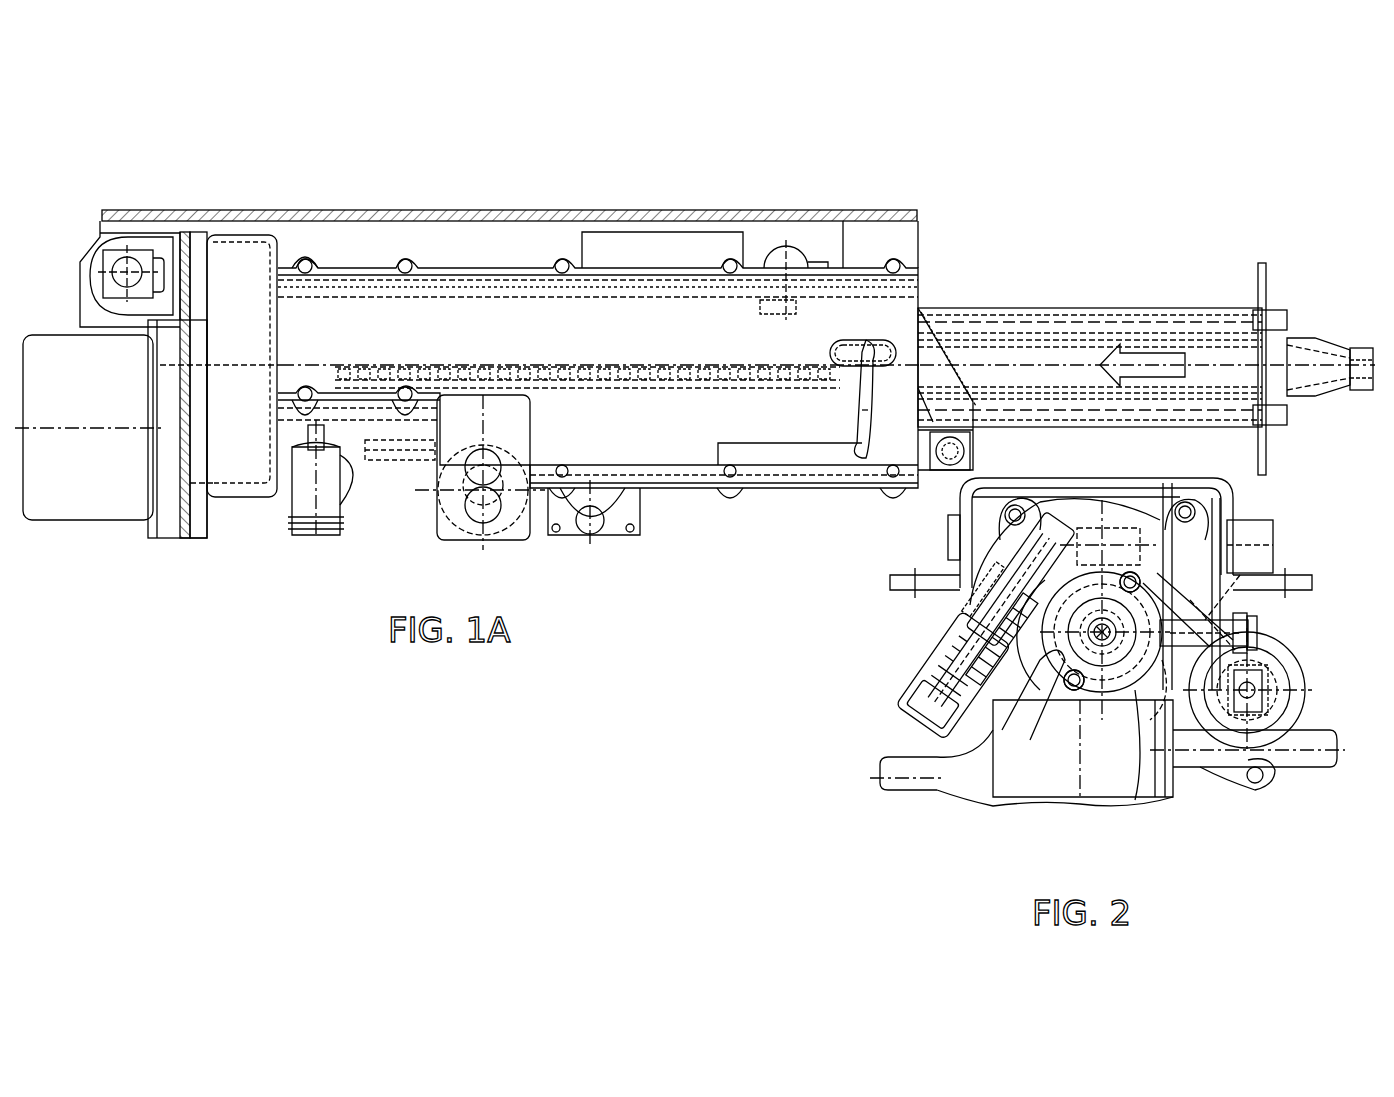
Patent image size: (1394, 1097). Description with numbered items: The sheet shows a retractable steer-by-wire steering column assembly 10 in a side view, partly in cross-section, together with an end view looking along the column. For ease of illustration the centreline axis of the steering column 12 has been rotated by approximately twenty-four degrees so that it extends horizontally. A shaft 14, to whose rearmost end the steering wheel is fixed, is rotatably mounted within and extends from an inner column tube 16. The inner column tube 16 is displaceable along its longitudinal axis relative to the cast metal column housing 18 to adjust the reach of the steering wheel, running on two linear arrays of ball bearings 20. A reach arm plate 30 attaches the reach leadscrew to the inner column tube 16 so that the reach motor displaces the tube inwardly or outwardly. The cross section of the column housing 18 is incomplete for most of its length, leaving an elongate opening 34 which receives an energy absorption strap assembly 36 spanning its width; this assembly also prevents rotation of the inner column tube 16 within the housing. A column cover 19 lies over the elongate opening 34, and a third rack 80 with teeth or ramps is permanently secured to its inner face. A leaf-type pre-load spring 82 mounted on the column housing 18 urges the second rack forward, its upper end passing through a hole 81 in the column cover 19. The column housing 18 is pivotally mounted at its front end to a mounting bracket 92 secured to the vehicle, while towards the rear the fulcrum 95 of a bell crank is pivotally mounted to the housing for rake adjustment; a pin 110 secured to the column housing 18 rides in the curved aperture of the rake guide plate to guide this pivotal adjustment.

In FIG. 1A, the steering column assembly 10 is at (814, 147).
In FIG. 1A, the steering column 12 is at (507, 252).
In FIG. 1A, the shaft 14 is at (1365, 345).
In FIG. 1A, the inner column tube 16 is at (1093, 308).
In FIG. 1A, the column housing 18 is at (328, 258).
In FIG. 2, the column housing 18 is at (945, 750).
In FIG. 1A, the column cover 19 is at (355, 315).
In FIG. 2, the column cover 19 is at (915, 700).
In FIG. 2, the ball bearings 20 is at (1075, 690).
In FIG. 1A, the reach arm plate 30 is at (932, 352).
In FIG. 2, the elongate opening 34 is at (1010, 780).
In FIG. 2, the energy absorption strap assembly 36 is at (1070, 560).
In FIG. 1A, the third rack 80 is at (508, 362).
In FIG. 1A, the hole 81 is at (896, 350).
In FIG. 1A, the pre-load spring 82 is at (855, 410).
In FIG. 1A, the mounting bracket 92 is at (165, 218).
In FIG. 1A, the fulcrum 95 is at (786, 258).
In FIG. 2, the pin 110 is at (1262, 632).